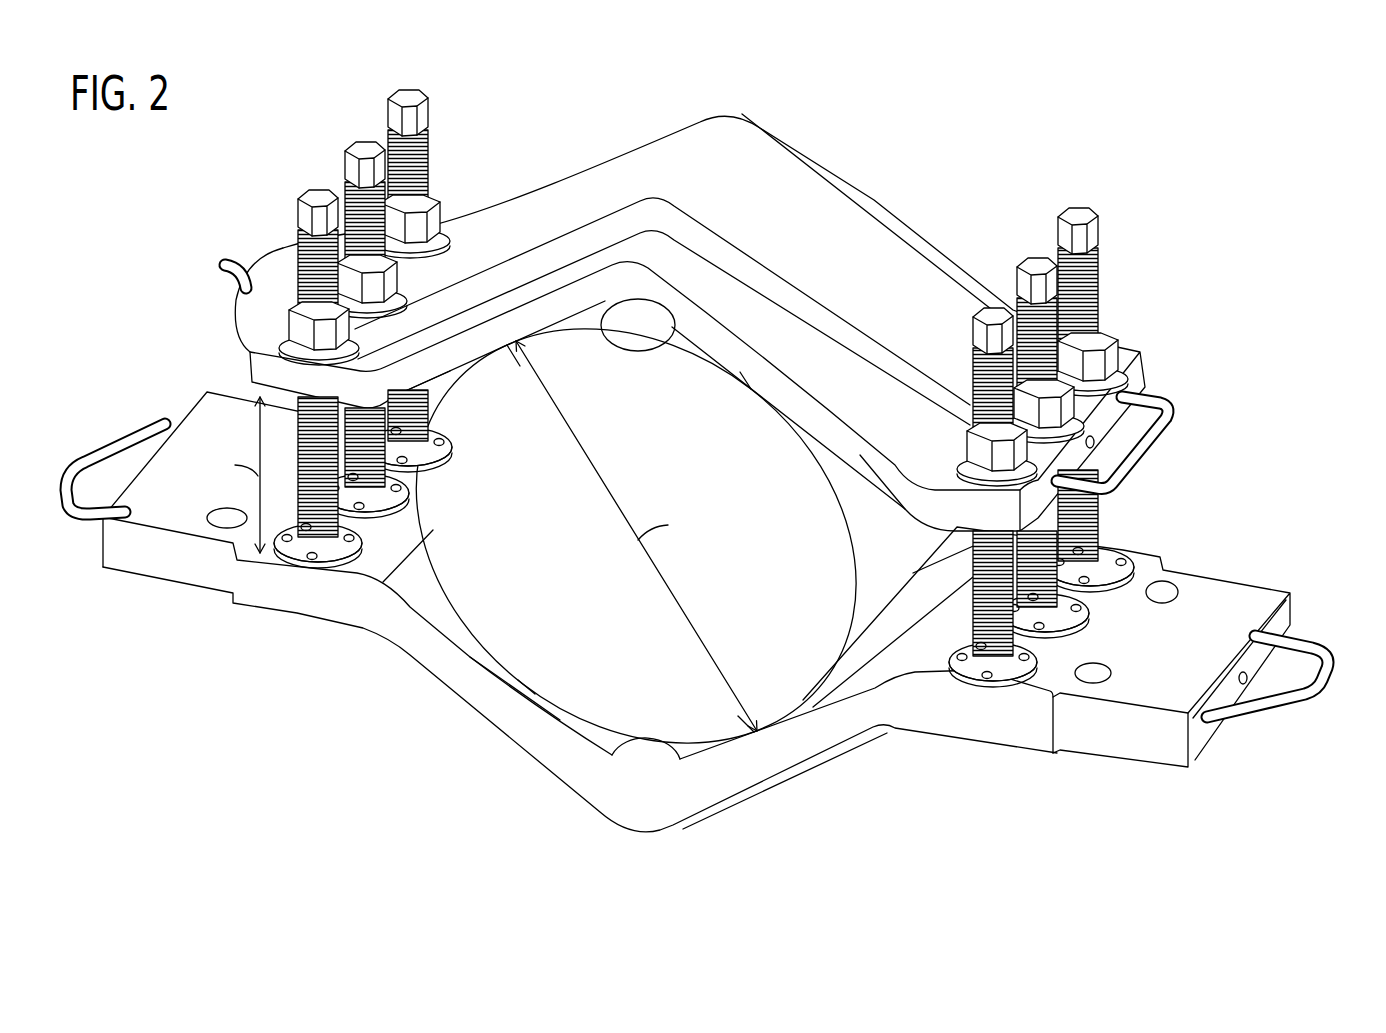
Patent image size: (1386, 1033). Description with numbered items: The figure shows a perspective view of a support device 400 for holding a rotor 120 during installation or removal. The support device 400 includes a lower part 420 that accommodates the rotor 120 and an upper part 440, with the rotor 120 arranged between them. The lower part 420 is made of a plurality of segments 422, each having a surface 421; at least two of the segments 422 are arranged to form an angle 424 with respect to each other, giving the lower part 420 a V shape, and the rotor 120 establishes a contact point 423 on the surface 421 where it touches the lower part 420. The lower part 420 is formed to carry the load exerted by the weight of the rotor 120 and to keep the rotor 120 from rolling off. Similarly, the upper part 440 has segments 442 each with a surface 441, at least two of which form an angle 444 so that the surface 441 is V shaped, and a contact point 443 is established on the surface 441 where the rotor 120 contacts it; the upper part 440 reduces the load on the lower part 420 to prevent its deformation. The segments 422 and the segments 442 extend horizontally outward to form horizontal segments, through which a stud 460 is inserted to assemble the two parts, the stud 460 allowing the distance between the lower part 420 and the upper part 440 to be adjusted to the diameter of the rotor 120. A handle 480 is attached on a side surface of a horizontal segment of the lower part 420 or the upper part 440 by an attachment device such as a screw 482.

The support device 400 is at (1062, 100).
The rotor 120 is at (587, 612).
The lower part 420 is at (696, 612).
The surface 421 is at (477, 692).
The segments 422 is at (357, 570).
The contact point 423 is at (514, 686).
The angle 424 is at (650, 727).
The upper part 440 is at (672, 312).
The surface 441 is at (750, 316).
The segments 442 is at (268, 340).
The contact point 443 is at (512, 352).
The angle 444 is at (627, 352).
The stud 460 is at (385, 122).
The handle 480 is at (245, 286).
The screw 482 is at (1245, 672).